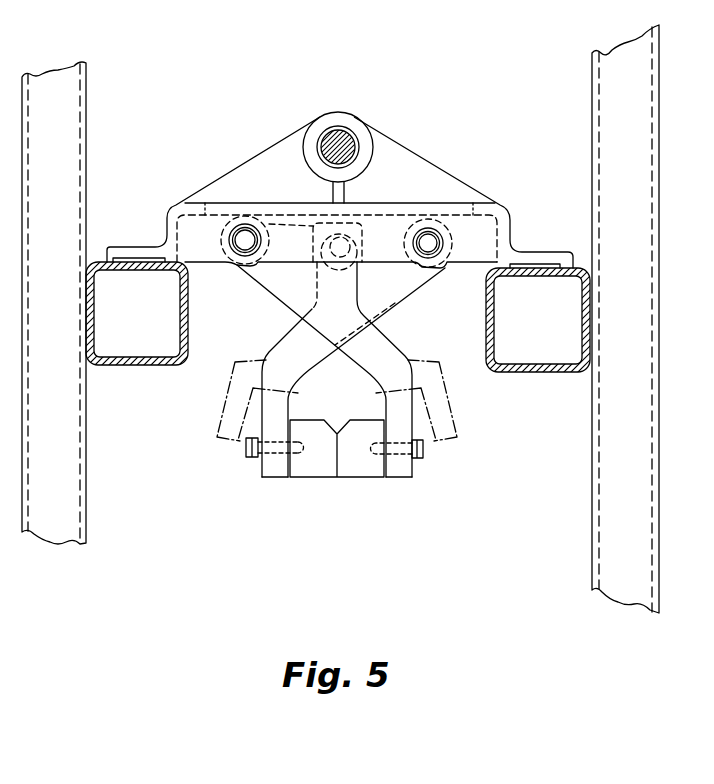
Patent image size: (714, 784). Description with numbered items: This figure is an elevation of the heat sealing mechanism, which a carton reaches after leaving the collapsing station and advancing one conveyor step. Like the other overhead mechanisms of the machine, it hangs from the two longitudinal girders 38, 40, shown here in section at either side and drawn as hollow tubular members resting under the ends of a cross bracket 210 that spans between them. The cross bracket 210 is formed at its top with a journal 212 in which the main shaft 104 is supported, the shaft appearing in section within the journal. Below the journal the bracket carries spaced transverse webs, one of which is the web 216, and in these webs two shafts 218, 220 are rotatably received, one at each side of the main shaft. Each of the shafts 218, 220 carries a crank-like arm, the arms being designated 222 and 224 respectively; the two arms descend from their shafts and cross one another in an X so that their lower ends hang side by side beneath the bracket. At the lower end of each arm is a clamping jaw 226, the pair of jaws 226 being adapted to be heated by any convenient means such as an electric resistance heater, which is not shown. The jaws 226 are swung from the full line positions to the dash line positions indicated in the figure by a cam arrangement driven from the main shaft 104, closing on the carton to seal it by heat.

The longitudinal girder 38 is at (130, 364).
The longitudinal girder 40 is at (547, 367).
The main shaft 104 is at (350, 153).
The cross bracket 210 is at (450, 186).
The journal 212 is at (361, 118).
The transverse web 216 is at (208, 256).
The shaft 218 is at (261, 240).
The shaft 220 is at (443, 244).
The crank-like arm 222 is at (283, 290).
The crank-like arm 224 is at (400, 288).
The clamping jaw 226 is at (357, 494).